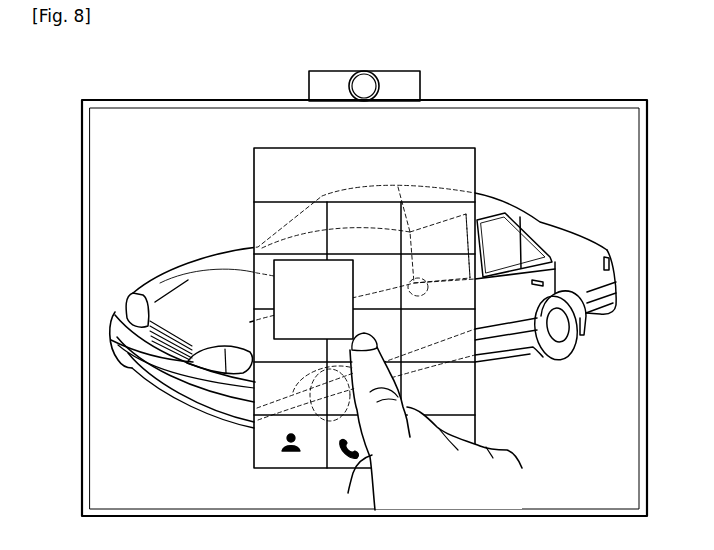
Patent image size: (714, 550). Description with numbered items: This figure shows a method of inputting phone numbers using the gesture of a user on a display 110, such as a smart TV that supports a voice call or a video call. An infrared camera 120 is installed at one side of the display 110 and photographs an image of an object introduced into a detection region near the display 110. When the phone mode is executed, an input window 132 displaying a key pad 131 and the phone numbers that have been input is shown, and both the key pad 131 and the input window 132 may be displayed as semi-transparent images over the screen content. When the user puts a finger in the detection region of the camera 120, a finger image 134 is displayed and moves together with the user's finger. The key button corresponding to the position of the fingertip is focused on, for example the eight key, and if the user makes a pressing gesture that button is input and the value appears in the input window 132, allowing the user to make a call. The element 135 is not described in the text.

The display 110 is at (503, 108).
The infrared camera 120 is at (397, 71).
The key pad 131 is at (326, 306).
The input window 132 is at (265, 176).
The finger image 134 is at (435, 447).
The front portion of object image 135 is at (150, 340).